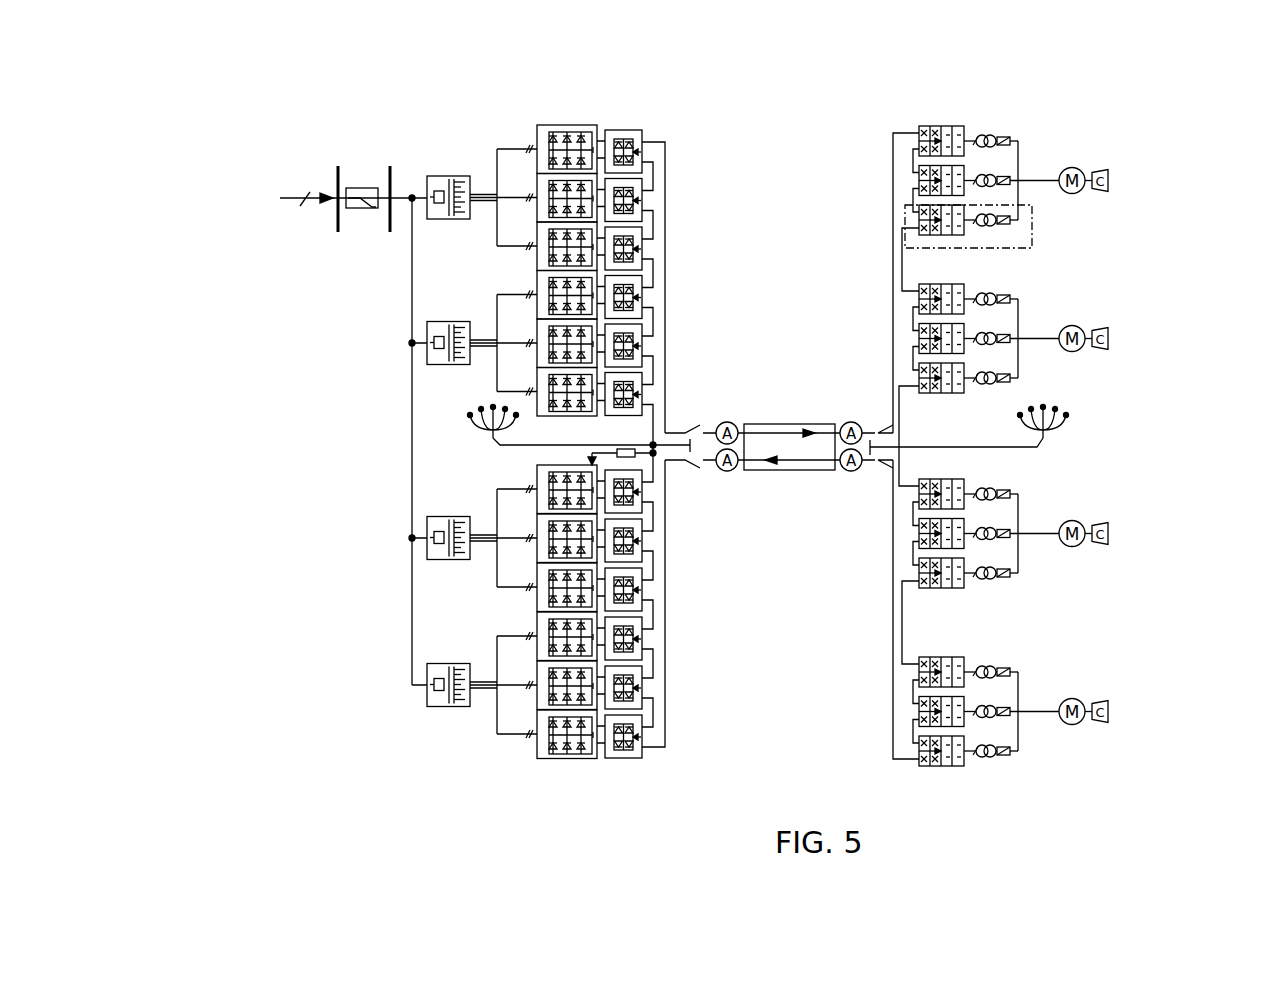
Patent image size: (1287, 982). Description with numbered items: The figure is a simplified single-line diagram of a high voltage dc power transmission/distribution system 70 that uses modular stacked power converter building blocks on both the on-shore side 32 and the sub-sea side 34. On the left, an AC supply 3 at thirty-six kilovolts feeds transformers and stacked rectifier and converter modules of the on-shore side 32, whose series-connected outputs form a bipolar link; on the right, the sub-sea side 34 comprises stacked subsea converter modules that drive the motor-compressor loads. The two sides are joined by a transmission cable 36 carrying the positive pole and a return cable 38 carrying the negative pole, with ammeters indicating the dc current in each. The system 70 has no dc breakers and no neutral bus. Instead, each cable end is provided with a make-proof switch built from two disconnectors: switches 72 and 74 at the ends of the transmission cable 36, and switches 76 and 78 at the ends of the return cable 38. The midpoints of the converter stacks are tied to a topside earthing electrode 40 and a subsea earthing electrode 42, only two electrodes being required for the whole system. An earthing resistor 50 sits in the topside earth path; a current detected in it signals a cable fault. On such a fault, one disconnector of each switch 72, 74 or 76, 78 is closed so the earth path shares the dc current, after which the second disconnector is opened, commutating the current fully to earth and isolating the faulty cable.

The three-phase AC supply 3 is at (309, 188).
The on-shore side 32 is at (453, 143).
The sub-sea side 34 is at (1050, 152).
The transmission cable 36 is at (745, 426).
The return cable 38 is at (745, 470).
The earthing electrode 40 is at (463, 414).
The earthing electrode 42 is at (1076, 415).
The earthing resistor 50 is at (614, 453).
The high voltage dc power transmission/distribution system 70 is at (773, 90).
The switch 72 is at (688, 422).
The switch 74 is at (866, 422).
The switch 76 is at (686, 500).
The switch 78 is at (866, 500).